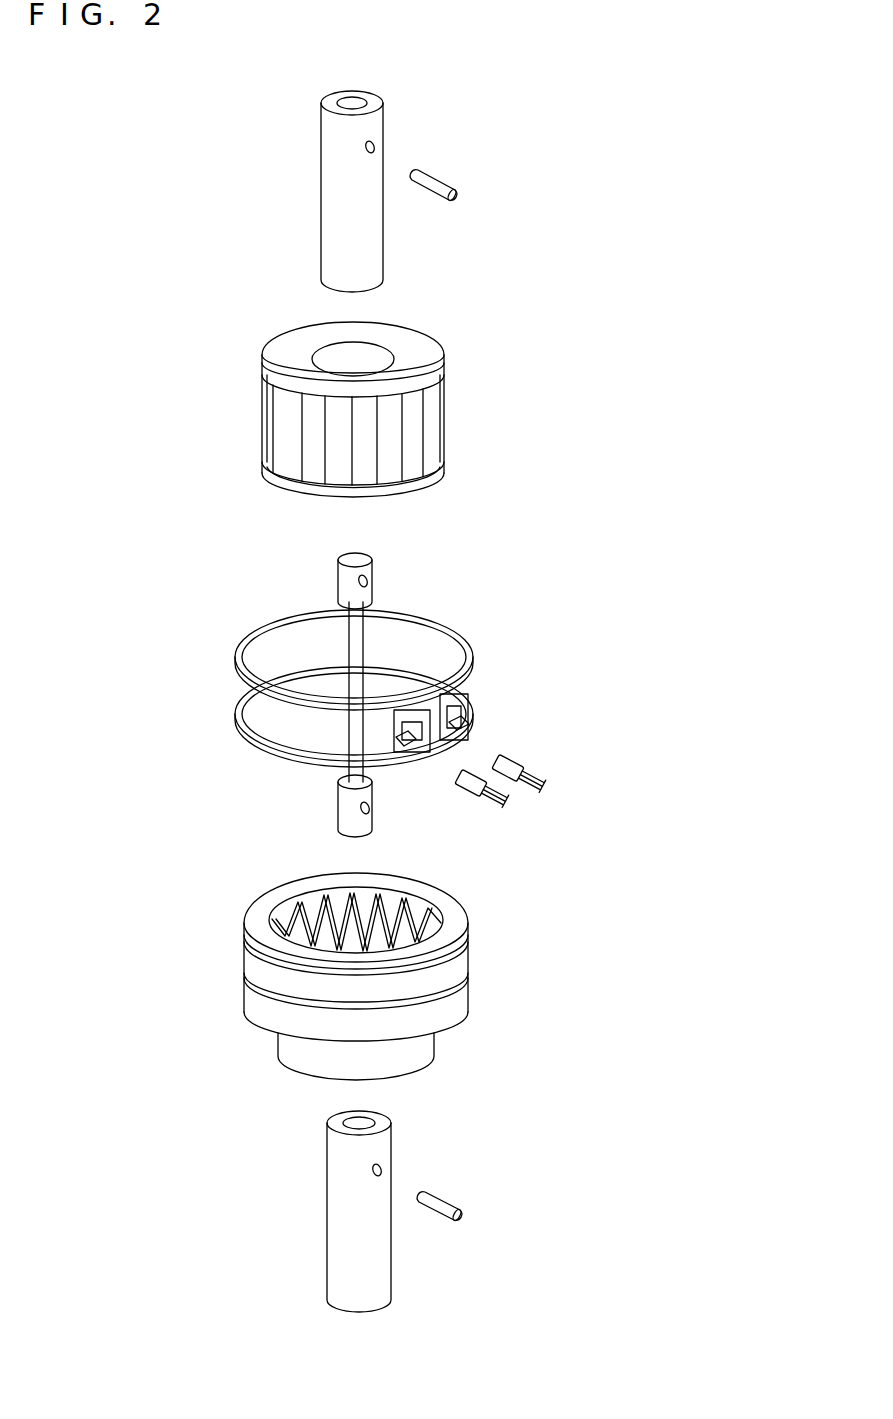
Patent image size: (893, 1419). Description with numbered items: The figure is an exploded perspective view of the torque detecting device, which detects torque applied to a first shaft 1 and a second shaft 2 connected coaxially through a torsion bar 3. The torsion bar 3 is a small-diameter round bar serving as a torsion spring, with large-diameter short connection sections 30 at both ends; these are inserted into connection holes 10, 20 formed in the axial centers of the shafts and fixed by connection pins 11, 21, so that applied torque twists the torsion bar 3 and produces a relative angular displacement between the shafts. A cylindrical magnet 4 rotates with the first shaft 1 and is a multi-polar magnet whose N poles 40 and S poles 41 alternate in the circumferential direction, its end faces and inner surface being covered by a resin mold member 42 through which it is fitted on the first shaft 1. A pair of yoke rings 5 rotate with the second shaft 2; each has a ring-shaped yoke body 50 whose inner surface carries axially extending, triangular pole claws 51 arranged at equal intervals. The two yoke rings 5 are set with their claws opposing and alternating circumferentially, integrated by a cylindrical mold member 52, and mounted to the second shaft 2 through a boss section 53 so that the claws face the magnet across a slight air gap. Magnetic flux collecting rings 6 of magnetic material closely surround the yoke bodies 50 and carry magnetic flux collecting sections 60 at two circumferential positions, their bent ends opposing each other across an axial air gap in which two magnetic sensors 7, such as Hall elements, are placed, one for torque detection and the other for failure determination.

The first shaft 1 is at (330, 198).
The connection hole 10 is at (356, 103).
The connection pin 11 is at (435, 175).
The second shaft 2 is at (335, 1207).
The connection hole 20 is at (360, 1122).
The connection pin 21 is at (445, 1200).
The torsion bar 3 is at (353, 643).
The connection section 30 is at (340, 585).
The cylindrical magnet 4 is at (302, 414).
The N pole 40 is at (400, 408).
The S pole 41 is at (366, 474).
The mold member 42 is at (325, 398).
The yoke ring 5 is at (343, 960).
The yoke body 50 is at (245, 965).
The pole claw 51 is at (297, 910).
The mold member 52 is at (468, 990).
The boss section 53 is at (433, 1040).
The magnetic flux collecting ring 6 is at (235, 665).
The magnetic flux collecting section 60 is at (455, 722).
The magnetic sensor 7 is at (515, 762).